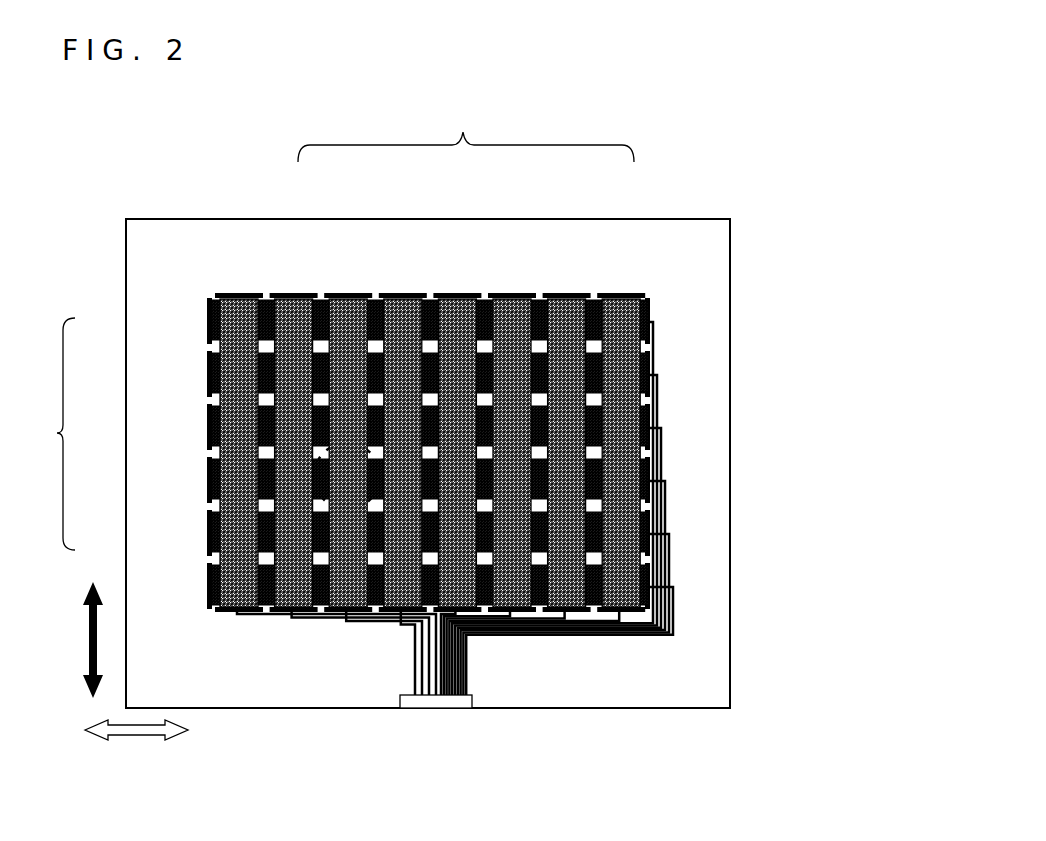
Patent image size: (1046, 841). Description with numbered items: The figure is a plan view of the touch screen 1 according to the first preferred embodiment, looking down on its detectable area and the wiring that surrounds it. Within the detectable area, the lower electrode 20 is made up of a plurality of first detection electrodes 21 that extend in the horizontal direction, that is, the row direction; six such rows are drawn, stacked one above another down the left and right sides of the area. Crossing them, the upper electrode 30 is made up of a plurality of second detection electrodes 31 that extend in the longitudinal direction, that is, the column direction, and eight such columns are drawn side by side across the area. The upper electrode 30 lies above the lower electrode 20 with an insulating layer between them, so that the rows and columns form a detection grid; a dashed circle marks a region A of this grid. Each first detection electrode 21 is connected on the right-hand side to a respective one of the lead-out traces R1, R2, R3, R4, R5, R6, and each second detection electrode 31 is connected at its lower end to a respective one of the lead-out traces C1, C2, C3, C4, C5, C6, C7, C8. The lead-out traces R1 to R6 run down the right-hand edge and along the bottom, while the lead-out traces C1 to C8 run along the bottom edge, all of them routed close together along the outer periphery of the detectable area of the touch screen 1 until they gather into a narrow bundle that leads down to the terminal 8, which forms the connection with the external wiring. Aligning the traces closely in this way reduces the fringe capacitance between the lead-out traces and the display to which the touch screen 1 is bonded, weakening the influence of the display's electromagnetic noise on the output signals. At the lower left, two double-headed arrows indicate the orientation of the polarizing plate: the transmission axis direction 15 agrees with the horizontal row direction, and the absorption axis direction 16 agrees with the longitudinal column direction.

The touch screen 1 is at (777, 196).
The terminal 8 is at (440, 705).
The transmission axis direction 15 is at (173, 737).
The absorption axis direction 16 is at (92, 692).
The lower electrode 20 is at (45, 434).
The first detection electrode 21 is at (210, 300).
The upper electrode 30 is at (466, 134).
The second detection electrode 31 is at (238, 293).
The region A is at (347, 476).
The lead-out trace C1 is at (250, 617).
The lead-out trace C2 is at (300, 618).
The lead-out trace C3 is at (350, 622).
The lead-out trace C4 is at (400, 625).
The lead-out trace C5 is at (468, 613).
The lead-out trace C6 is at (512, 615).
The lead-out trace C7 is at (570, 617).
The lead-out trace C8 is at (617, 613).
The lead-out trace R1 is at (653, 338).
The lead-out trace R2 is at (655, 383).
The lead-out trace R3 is at (655, 435).
The lead-out trace R4 is at (655, 487).
The lead-out trace R5 is at (655, 538).
The lead-out trace R6 is at (655, 590).